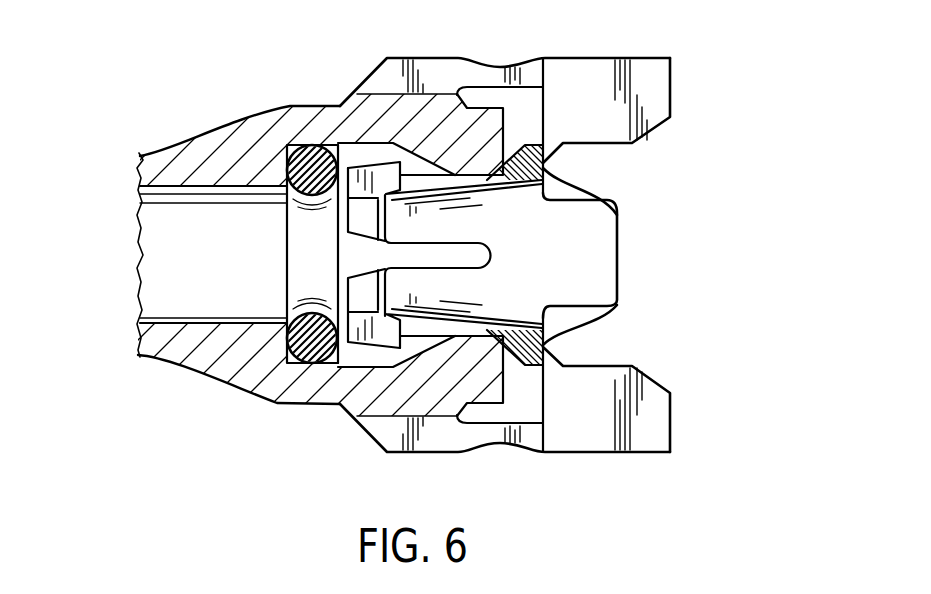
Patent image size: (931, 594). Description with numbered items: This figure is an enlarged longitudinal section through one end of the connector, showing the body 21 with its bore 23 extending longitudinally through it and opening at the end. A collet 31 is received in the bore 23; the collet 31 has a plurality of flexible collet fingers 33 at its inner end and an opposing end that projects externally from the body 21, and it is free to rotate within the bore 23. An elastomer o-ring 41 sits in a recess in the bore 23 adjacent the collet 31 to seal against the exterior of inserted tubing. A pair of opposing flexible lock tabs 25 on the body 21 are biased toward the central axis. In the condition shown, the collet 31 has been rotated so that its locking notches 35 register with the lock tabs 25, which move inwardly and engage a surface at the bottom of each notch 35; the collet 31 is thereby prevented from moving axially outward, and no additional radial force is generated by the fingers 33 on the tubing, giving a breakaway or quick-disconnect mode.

The body 21 is at (213, 145).
The bore 23 is at (165, 290).
The lock tabs 25 is at (662, 88).
The collet 31 is at (510, 140).
The collet fingers 33 is at (373, 166).
The locking notch 35 is at (577, 196).
The o-ring 41 is at (300, 158).